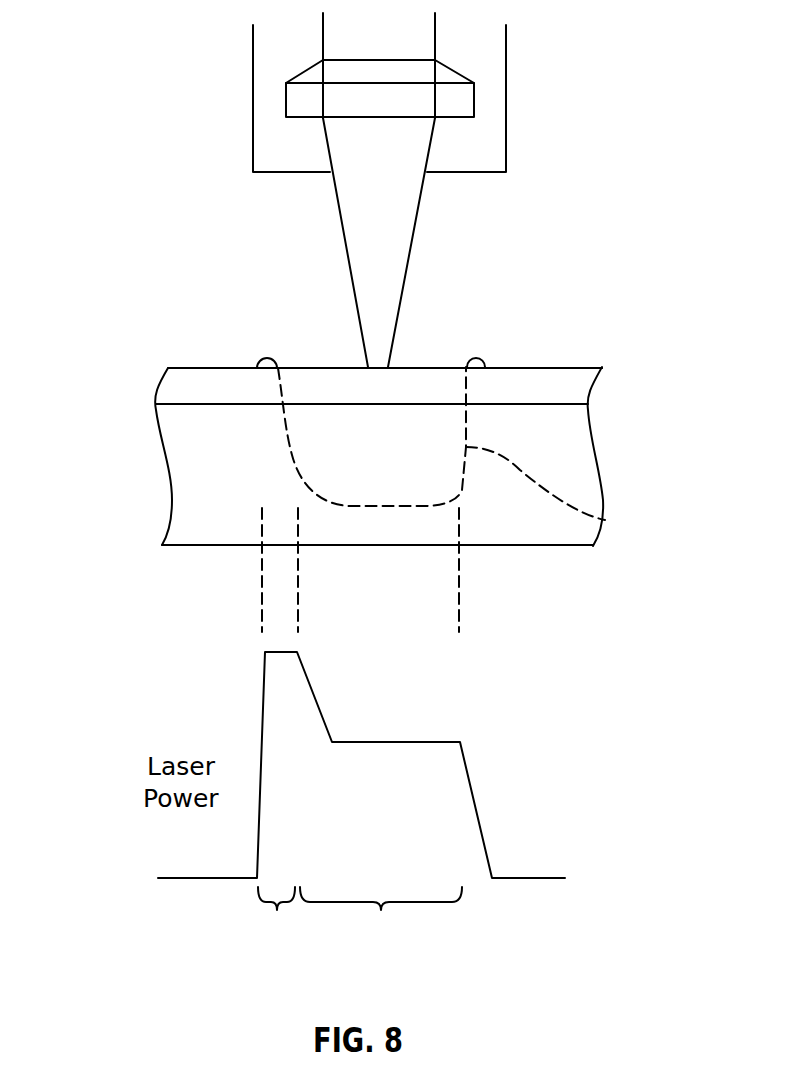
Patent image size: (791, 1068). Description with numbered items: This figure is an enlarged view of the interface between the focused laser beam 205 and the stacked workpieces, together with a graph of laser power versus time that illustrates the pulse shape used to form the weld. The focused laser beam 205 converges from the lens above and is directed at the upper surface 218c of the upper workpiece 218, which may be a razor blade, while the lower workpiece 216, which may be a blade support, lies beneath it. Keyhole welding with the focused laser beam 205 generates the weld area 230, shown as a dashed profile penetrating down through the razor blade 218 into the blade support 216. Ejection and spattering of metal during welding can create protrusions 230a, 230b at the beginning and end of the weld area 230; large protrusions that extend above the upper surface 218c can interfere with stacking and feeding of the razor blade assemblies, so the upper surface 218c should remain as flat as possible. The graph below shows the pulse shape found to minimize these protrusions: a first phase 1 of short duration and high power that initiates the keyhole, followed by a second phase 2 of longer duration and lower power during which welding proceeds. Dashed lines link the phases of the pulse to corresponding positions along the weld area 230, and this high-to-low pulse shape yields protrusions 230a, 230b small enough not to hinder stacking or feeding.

The focused laser beam 205 is at (415, 242).
The lower workpiece 216 is at (187, 497).
The upper workpiece 218 is at (183, 388).
The upper surface 218c is at (552, 367).
The weld area 230 is at (606, 521).
The protrusion 230a is at (253, 355).
The protrusion 230b is at (487, 350).
The first laser power phase 1 is at (276, 917).
The second laser power phase 2 is at (381, 917).